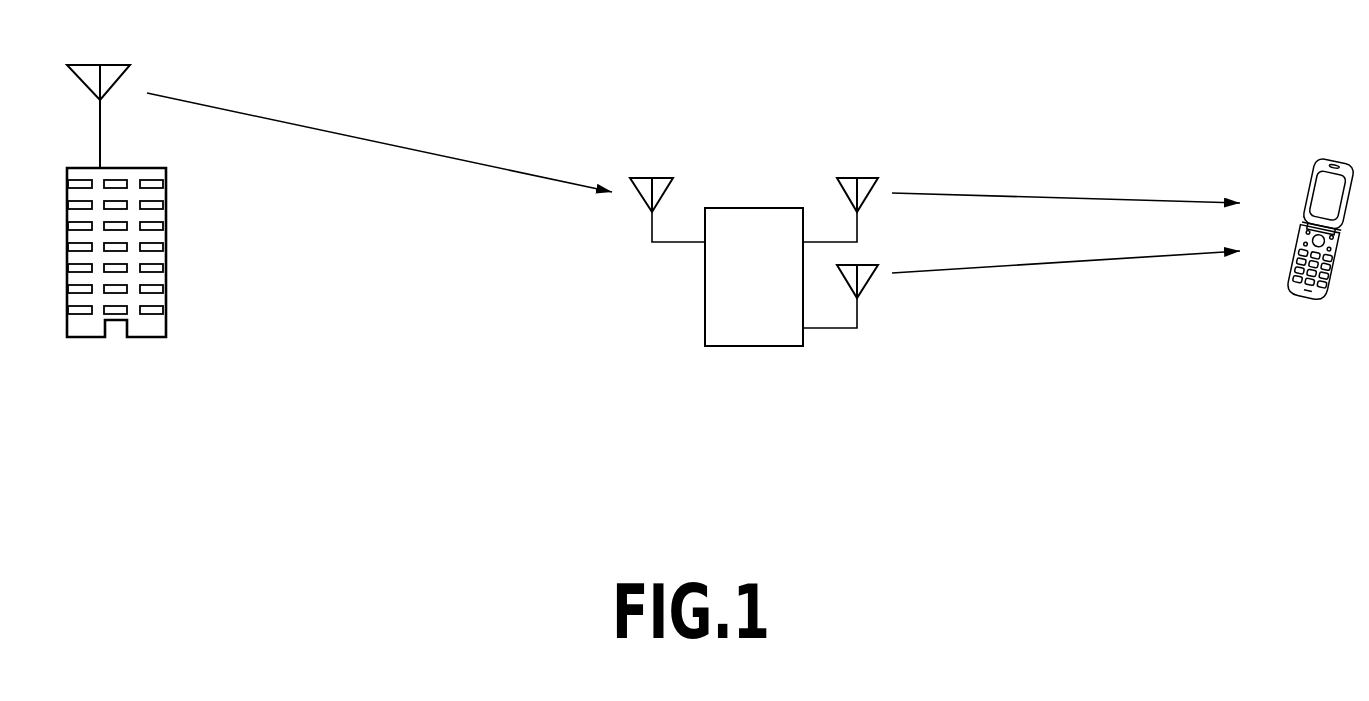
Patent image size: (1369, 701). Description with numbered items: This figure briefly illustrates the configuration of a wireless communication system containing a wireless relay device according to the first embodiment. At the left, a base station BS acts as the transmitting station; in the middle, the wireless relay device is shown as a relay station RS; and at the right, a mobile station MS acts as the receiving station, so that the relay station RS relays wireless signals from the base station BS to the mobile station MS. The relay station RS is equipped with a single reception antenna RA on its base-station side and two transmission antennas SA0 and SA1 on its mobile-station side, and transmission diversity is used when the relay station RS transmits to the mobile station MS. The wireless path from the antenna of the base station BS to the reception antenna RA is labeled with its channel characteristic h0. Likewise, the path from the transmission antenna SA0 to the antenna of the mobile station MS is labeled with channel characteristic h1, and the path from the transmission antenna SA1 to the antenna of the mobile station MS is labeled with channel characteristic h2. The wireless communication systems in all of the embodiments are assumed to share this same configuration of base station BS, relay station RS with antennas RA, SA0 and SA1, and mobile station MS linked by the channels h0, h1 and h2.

The base station BS is at (150, 340).
The relay station RS is at (758, 346).
The reception antenna RA is at (642, 198).
The transmission antenna SA0 is at (870, 198).
The transmission antenna SA1 is at (870, 285).
The mobile station MS is at (1317, 297).
The channel characteristic h0 is at (379, 142).
The channel characteristic h1 is at (1066, 185).
The channel characteristic h2 is at (1066, 252).